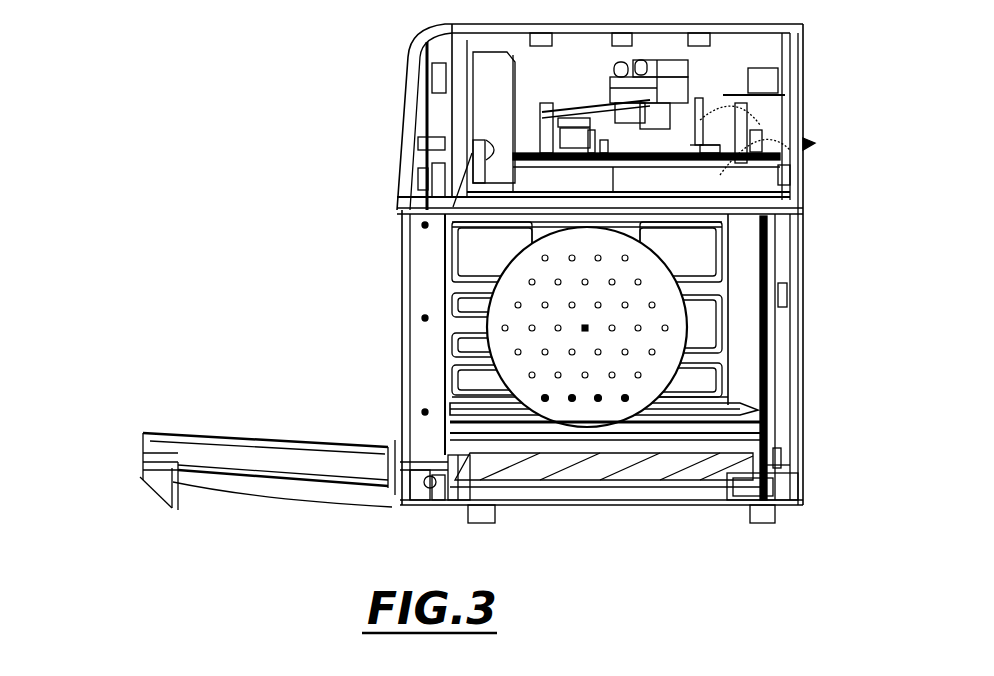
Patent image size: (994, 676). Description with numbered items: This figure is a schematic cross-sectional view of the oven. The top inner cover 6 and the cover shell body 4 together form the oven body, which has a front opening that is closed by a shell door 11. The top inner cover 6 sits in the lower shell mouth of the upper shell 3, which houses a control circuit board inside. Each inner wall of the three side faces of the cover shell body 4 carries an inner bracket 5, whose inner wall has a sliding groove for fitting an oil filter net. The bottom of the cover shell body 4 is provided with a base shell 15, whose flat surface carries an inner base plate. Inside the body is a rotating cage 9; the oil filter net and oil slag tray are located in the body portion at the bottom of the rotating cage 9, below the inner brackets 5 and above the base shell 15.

The upper shell 3 is at (405, 108).
The top inner cover 6 is at (793, 112).
The cover shell body 4 is at (808, 306).
The rotating cage 9 is at (445, 320).
The inner bracket 5 is at (448, 386).
The base shell 15 is at (800, 458).
The shell door 11 is at (150, 451).